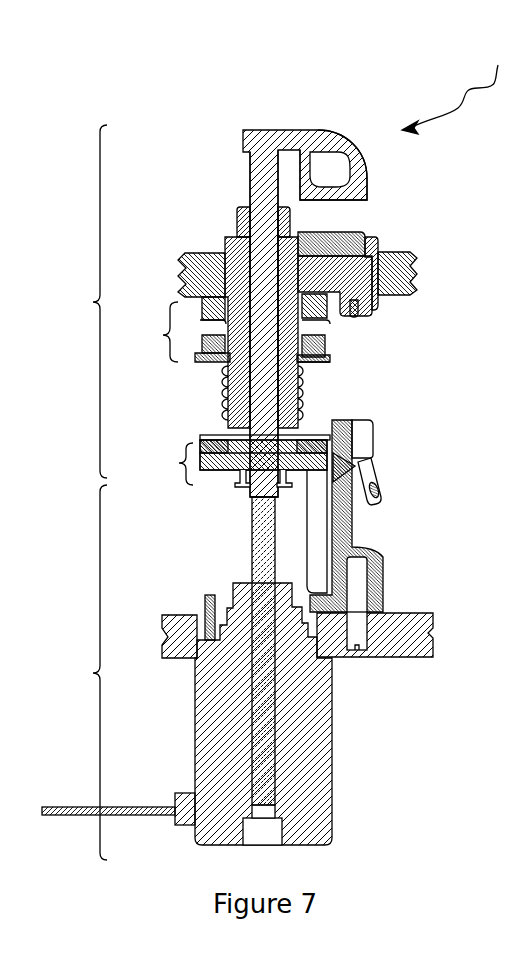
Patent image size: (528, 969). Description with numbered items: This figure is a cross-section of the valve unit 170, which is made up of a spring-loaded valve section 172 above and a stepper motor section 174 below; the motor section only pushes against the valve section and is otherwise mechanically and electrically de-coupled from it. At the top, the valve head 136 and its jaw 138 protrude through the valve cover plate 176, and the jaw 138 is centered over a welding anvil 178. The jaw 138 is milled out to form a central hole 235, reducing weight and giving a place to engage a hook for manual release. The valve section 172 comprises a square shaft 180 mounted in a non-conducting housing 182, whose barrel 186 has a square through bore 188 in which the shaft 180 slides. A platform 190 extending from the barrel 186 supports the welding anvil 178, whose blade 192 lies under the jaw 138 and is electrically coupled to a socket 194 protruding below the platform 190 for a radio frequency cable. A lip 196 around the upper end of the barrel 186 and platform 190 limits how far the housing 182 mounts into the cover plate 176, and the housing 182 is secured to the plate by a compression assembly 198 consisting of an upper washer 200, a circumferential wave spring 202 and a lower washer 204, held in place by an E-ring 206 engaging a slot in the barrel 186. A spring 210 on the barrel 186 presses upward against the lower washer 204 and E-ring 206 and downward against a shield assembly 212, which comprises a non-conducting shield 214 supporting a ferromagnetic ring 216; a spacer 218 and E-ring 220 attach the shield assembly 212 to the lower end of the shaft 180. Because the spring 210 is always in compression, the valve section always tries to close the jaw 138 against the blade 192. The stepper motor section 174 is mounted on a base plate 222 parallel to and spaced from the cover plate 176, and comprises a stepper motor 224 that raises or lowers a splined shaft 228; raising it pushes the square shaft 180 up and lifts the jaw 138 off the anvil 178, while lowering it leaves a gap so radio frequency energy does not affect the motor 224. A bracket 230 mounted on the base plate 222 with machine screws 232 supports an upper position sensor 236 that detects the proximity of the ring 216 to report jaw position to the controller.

The valve head 136 is at (324, 283).
The central hole 235 is at (324, 160).
The jaw 138 is at (364, 188).
The valve unit 170 is at (463, 86).
The square shaft 180 is at (250, 172).
The square through bore 188 is at (247, 208).
The lip 196 is at (228, 238).
The non-conducting housing 182 is at (222, 249).
The blade 192 is at (345, 232).
The welding anvil 178 is at (370, 238).
The platform 190 is at (378, 243).
The valve cover plate 176 is at (418, 278).
The socket 194 is at (360, 312).
The upper washer 200 is at (330, 300).
The circumferential wave spring 202 is at (328, 318).
The lower washer 204 is at (328, 350).
The E-ring 206 is at (312, 358).
The barrel 186 is at (225, 390).
The spring 210 is at (225, 408).
The ferromagnetic ring 216 is at (220, 440).
The shield assembly 212 is at (236, 462).
The non-conducting shield 214 is at (220, 470).
The spacer 218 is at (238, 484).
The E-ring 220 is at (241, 493).
The upper position sensor 236 is at (377, 442).
The bracket 230 is at (381, 552).
The base plate 222 is at (400, 614).
The splined shaft 228 is at (252, 575).
The machine screws 232 is at (362, 655).
The stepper motor 224 is at (333, 745).
The spring-loaded valve section 172 is at (93, 302).
The stepper motor section 174 is at (93, 673).
The compression assembly 198 is at (150, 332).